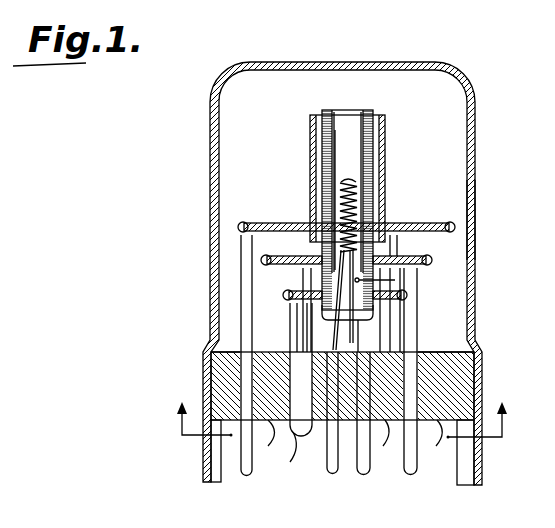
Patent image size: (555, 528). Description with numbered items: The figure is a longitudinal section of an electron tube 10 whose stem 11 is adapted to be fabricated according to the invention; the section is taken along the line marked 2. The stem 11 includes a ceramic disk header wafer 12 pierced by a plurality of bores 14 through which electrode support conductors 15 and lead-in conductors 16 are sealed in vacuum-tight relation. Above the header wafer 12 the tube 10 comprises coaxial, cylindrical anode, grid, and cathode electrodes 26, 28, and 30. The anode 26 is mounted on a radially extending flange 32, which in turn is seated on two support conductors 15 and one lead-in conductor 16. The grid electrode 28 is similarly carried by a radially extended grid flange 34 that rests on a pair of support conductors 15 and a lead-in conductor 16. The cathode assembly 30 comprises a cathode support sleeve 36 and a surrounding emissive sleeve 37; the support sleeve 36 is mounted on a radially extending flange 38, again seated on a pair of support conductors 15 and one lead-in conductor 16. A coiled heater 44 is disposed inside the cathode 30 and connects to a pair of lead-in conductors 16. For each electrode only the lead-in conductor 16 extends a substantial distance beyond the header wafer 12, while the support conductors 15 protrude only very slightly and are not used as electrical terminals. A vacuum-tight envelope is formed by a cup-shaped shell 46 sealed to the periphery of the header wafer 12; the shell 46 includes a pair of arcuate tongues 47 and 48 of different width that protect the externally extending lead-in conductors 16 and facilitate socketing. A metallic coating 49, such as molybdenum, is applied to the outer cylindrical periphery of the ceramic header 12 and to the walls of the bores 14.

The section line 2- 2 is at (339, 420).
The electron tube 10 is at (210, 163).
The stem 11 is at (453, 378).
The ceramic disk header wafer 12 is at (218, 376).
The bores 14 is at (444, 438).
The support conductors 15 is at (385, 446).
The lead-in conductors 16 is at (241, 282).
The anode electrode 26 is at (386, 146).
The grid electrode 28 is at (322, 112).
The cathode electrode 30 is at (361, 118).
The flange 32 is at (419, 222).
The grid flange 34 is at (420, 262).
The cathode support sleeve 36 is at (405, 284).
The emissive sleeve 37 is at (348, 130).
The flange 38 is at (292, 291).
The coiled heater 44 is at (354, 205).
The cup-shaped shell 46 is at (475, 206).
The arcuate tongue 47 is at (466, 487).
The arcuate tongue 48 is at (206, 484).
The metallic coating 49 is at (280, 352).